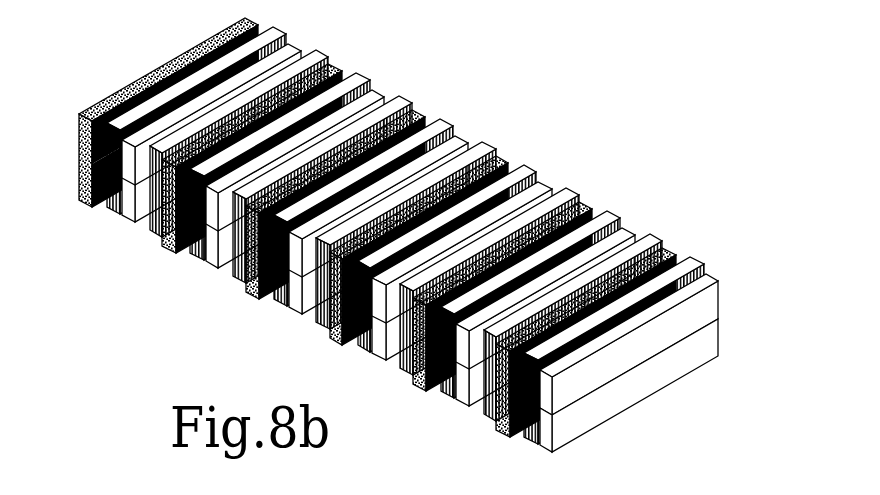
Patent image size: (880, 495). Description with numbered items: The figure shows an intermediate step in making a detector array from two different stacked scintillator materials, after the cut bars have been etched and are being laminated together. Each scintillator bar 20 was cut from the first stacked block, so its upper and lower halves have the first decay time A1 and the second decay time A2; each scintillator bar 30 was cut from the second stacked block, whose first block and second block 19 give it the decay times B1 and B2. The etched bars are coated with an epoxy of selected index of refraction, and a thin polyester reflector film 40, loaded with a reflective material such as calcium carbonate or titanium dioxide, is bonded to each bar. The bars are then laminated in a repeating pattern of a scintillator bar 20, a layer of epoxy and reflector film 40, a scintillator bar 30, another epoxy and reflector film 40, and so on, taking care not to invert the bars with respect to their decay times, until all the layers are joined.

The second block 19 is at (584, 0).
The scintillator bar 20 is at (301, 41).
The scintillator bar 30 is at (82, 206).
The reflector film 40 is at (275, 29).
The first decay time A1 is at (712, 300).
The second decay time A2 is at (712, 340).
The first decay time B1 is at (79, 146).
The second decay time B2 is at (79, 190).